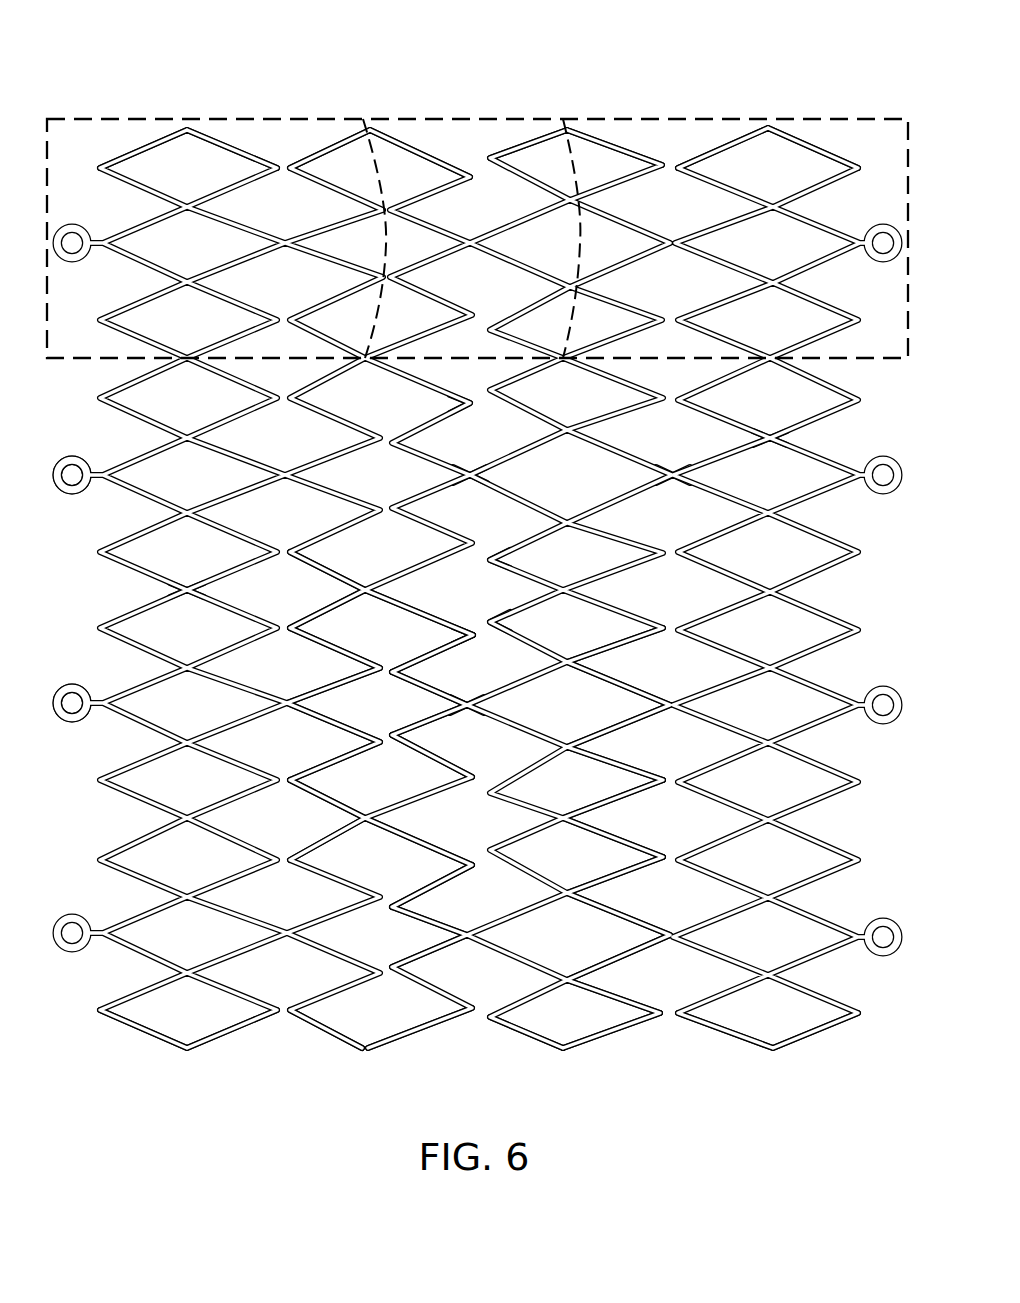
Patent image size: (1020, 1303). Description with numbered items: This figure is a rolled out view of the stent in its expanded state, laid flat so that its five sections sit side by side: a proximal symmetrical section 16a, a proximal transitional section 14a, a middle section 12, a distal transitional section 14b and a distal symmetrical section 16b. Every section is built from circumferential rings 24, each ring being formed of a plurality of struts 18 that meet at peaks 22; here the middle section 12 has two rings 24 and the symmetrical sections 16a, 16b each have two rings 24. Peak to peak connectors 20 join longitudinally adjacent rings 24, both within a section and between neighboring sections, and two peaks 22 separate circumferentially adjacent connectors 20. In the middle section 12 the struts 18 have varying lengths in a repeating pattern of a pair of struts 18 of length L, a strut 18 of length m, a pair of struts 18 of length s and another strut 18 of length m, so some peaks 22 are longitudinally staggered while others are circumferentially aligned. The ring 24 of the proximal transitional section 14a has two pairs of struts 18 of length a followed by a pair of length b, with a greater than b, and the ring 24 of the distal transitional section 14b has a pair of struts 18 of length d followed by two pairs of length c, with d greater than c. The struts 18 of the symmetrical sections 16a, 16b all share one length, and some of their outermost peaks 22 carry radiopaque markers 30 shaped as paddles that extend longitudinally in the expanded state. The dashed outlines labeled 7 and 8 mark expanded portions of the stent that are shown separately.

The section line for FIG. 7 is at (338, 118).
The section line for FIG. 8 is at (680, 118).
The middle section 12 is at (365, 1058).
The proximal transitional section 14a is at (322, 1043).
The distal transitional section 14b is at (625, 1043).
The proximal symmetrical section 16a is at (130, 1042).
The distal symmetrical section 16b is at (710, 1043).
The strut 18 is at (442, 416).
The connector 20 is at (189, 584).
The peak 22 is at (490, 556).
The circumferential ring 24 is at (135, 141).
The radiopaque marker 30 is at (76, 496).
The length a is at (350, 680).
The length b is at (345, 602).
The length c is at (617, 652).
The length d is at (615, 808).
The length l L is at (410, 580).
The length m is at (424, 652).
The length s is at (427, 717).